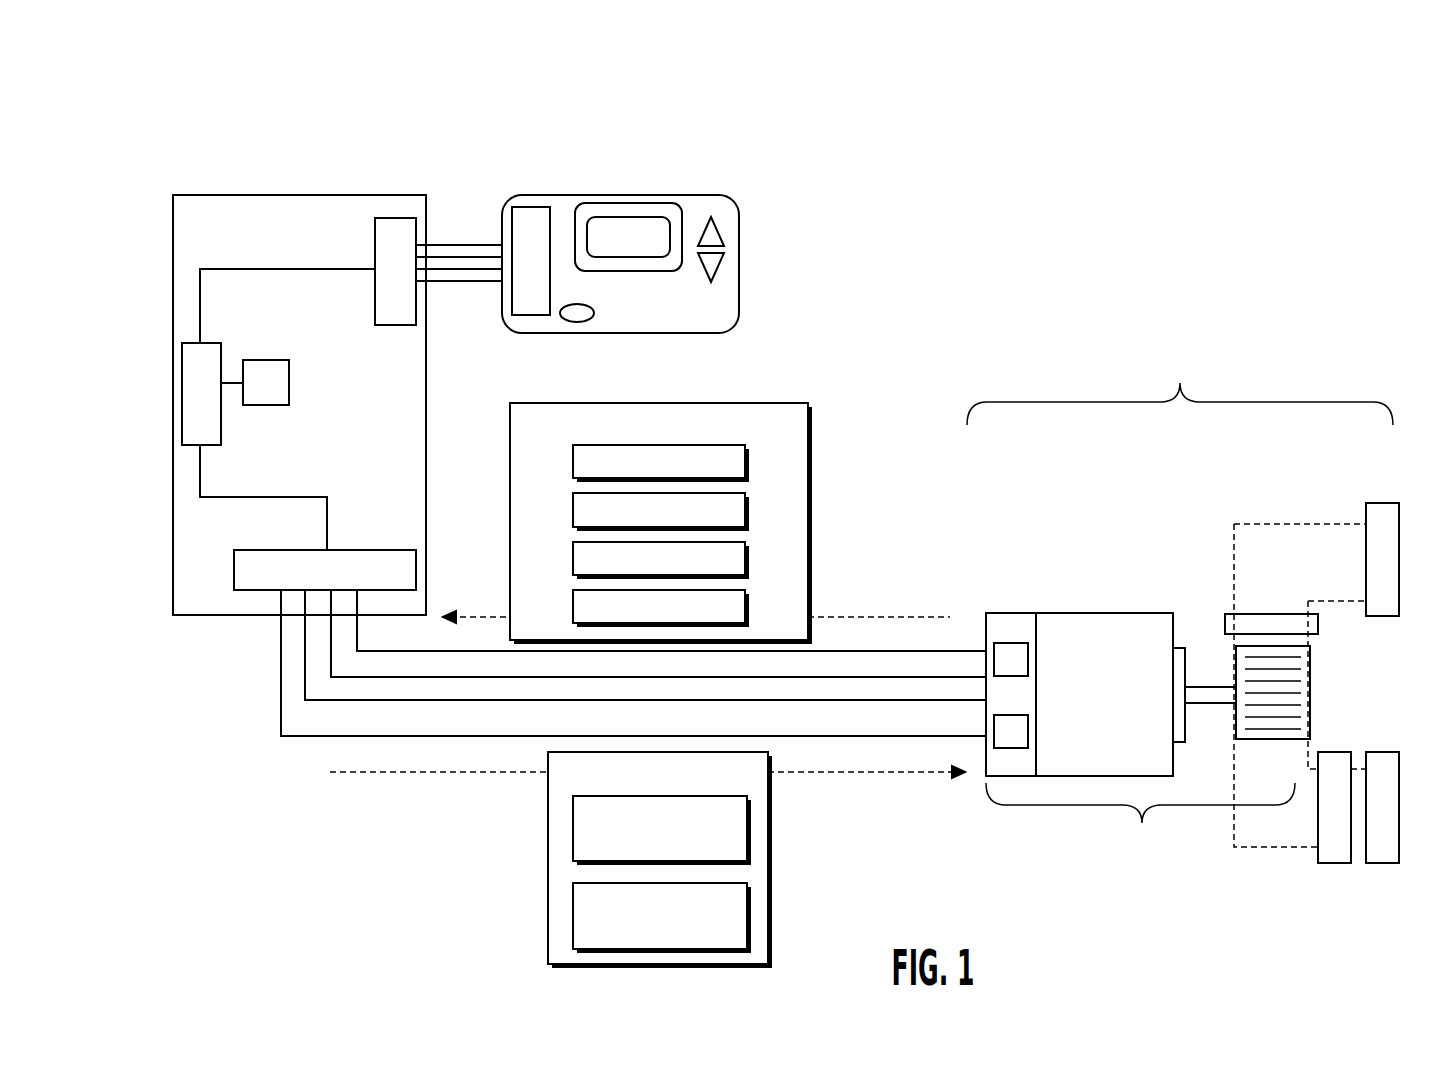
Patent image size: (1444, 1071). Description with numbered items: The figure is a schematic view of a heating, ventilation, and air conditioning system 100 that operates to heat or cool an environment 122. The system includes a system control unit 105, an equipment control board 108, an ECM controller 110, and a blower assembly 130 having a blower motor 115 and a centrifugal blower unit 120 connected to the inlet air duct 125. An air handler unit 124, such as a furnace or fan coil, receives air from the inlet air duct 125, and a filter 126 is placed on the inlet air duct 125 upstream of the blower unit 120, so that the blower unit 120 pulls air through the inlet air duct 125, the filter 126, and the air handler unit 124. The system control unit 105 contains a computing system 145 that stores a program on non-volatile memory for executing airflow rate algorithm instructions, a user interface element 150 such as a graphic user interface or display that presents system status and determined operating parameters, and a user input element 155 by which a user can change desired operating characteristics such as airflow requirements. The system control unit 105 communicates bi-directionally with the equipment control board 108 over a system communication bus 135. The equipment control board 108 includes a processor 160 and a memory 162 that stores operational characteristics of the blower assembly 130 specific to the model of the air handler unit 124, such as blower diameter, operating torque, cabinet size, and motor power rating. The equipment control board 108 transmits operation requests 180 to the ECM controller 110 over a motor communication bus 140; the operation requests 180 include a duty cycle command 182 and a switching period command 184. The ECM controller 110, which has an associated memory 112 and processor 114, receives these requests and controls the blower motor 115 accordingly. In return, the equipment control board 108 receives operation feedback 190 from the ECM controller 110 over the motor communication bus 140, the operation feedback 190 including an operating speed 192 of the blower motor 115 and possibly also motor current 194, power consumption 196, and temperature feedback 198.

The HVAC system 100 is at (190, 132).
The system control unit 105 is at (613, 195).
The equipment control board 108 is at (352, 195).
The ECM controller 110 is at (1016, 620).
The memory 112 is at (1028, 657).
The processor 114 is at (1028, 742).
The blower motor 115 is at (1138, 620).
The blower unit 120 is at (1247, 644).
The environment 122 is at (1392, 600).
The air handler unit 124 is at (1320, 626).
The inlet air duct 125 is at (1342, 543).
The filter 126 is at (1331, 852).
The blower assembly 130 is at (1140, 736).
The system communication bus 135 is at (453, 245).
The motor communication bus 140 is at (280, 651).
The computing system 145 is at (528, 207).
The user interface element 150 is at (628, 272).
The user input element 155 is at (712, 263).
The processor 160 is at (192, 388).
The memory 162 is at (270, 405).
The operation requests 180 is at (768, 862).
The duty cycle command 182 is at (749, 832).
The switching period command 184 is at (749, 930).
The operation feedback 190 is at (818, 415).
The operating speed 192 is at (747, 607).
The motor current 194 is at (747, 560).
The power consumption 196 is at (747, 510).
The temperature feedback 198 is at (747, 462).